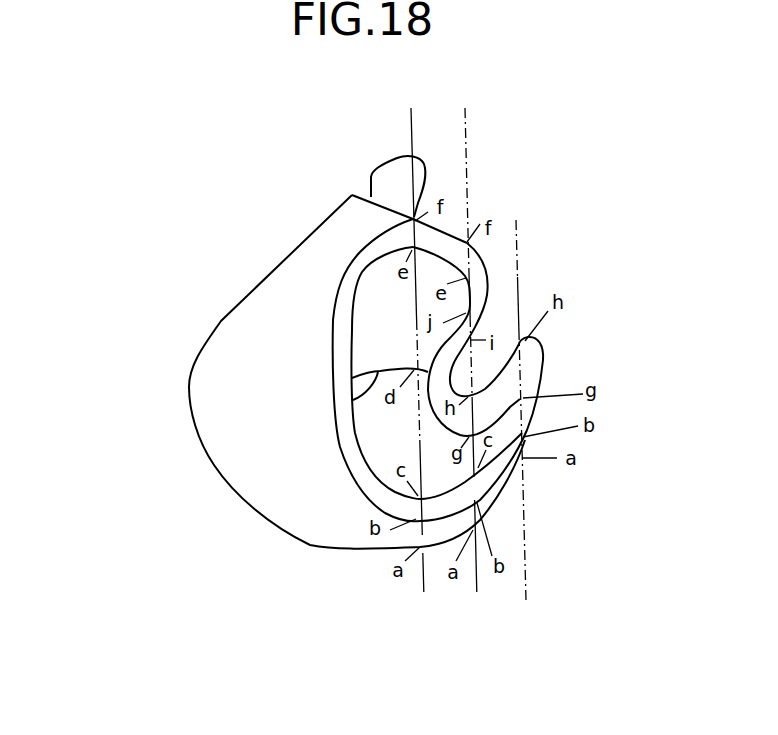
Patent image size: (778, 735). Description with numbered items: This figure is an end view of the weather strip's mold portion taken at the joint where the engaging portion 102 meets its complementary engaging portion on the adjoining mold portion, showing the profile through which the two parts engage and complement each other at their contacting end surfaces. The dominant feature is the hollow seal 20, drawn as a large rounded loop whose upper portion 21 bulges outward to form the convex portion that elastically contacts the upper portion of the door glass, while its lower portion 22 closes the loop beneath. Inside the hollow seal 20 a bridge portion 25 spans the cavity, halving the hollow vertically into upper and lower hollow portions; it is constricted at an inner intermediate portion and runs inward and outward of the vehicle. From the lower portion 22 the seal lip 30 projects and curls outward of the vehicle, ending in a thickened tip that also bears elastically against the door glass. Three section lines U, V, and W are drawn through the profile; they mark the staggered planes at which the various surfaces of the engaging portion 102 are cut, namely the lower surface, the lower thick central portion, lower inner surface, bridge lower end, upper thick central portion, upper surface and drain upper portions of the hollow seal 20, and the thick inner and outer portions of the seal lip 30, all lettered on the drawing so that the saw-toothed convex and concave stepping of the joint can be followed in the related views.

The hollow seal 20 is at (482, 291).
The upper portion 21 is at (385, 320).
The lower portion 22 is at (380, 437).
The bridge portion 25 is at (349, 401).
The seal lip 30 is at (530, 352).
The engaging portion 102 is at (299, 545).
The section line U is at (421, 352).
The section line V is at (472, 358).
The section line W is at (524, 405).